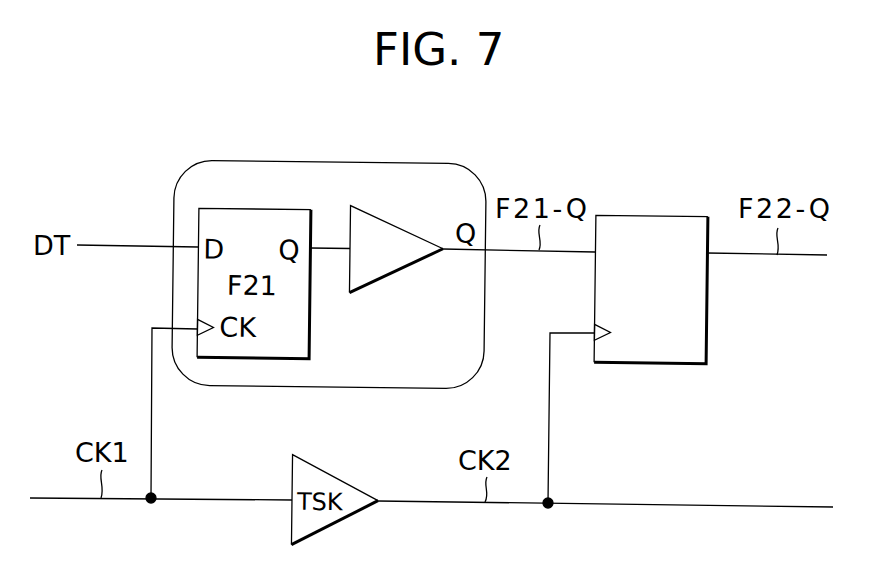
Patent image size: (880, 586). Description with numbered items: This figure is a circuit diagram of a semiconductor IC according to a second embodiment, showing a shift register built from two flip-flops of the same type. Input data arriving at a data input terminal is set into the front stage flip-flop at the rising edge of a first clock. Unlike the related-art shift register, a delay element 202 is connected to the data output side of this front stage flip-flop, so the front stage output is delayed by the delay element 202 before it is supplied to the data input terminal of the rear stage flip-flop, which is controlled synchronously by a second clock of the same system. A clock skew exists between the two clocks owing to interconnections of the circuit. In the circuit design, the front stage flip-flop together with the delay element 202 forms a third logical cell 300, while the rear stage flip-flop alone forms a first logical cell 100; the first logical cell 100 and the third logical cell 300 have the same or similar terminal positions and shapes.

The third logical cell 300 is at (313, 162).
The delay element 202 is at (392, 282).
The first logical cell 100 is at (657, 216).